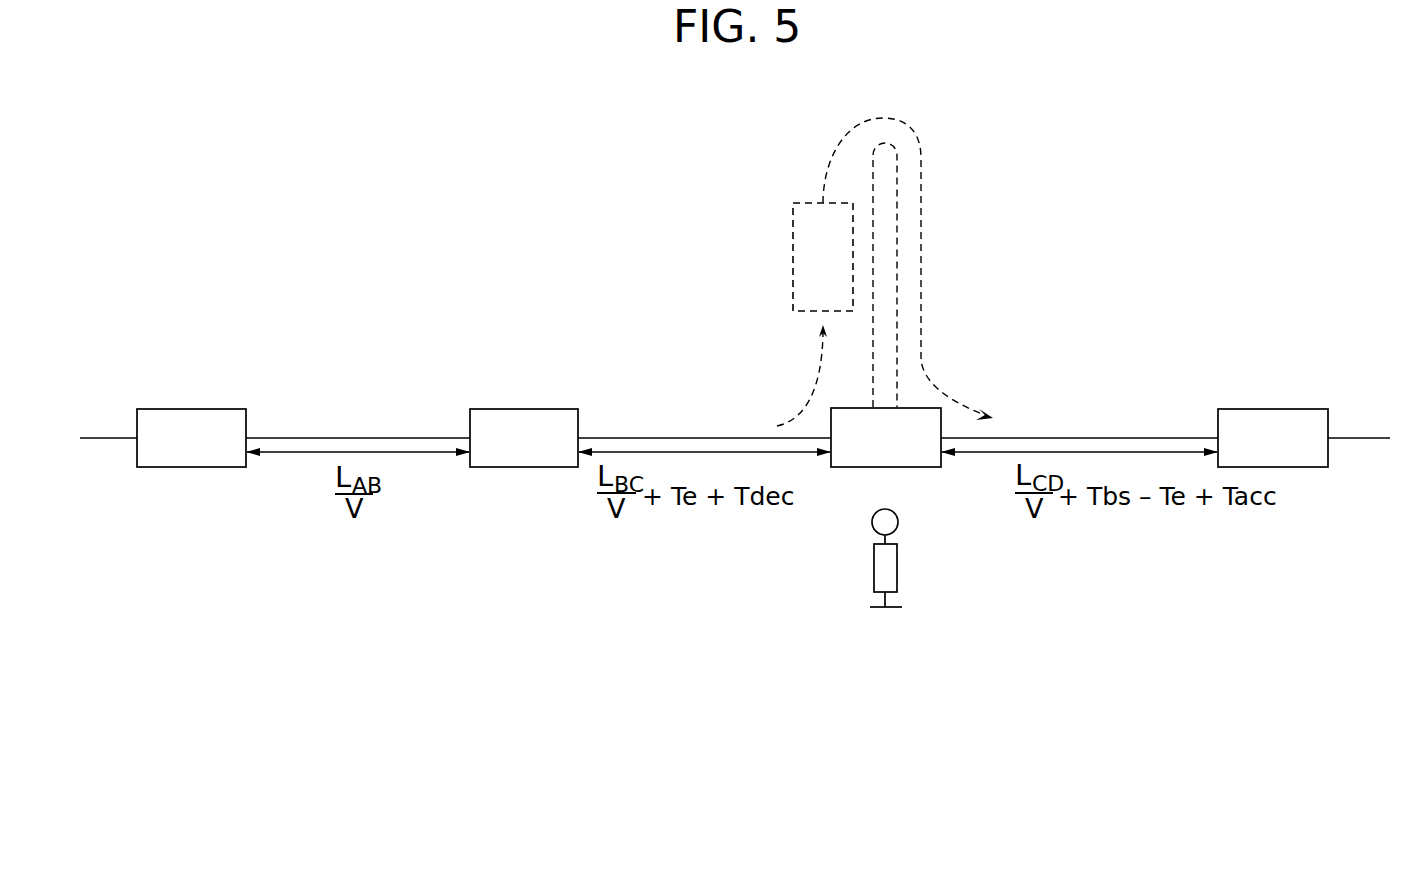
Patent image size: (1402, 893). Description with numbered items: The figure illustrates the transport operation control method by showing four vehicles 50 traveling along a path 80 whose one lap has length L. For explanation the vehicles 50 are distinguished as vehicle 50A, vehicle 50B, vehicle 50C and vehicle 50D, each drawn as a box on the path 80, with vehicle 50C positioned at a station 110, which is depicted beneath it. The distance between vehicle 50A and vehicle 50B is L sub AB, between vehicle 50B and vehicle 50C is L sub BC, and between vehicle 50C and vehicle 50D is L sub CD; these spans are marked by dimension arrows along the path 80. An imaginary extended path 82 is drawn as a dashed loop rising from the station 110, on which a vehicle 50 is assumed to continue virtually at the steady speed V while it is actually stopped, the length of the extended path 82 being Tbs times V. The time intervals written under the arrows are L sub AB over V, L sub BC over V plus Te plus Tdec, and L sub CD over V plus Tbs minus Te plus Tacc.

The vehicle 50A is at (187, 409).
The vehicle 50B is at (521, 409).
The vehicle 50C is at (910, 467).
The vehicle 50D is at (1270, 409).
The vehicle 50 is at (793, 260).
The path 80 is at (360, 438).
The extended path 82 is at (898, 161).
The station 110 is at (897, 564).